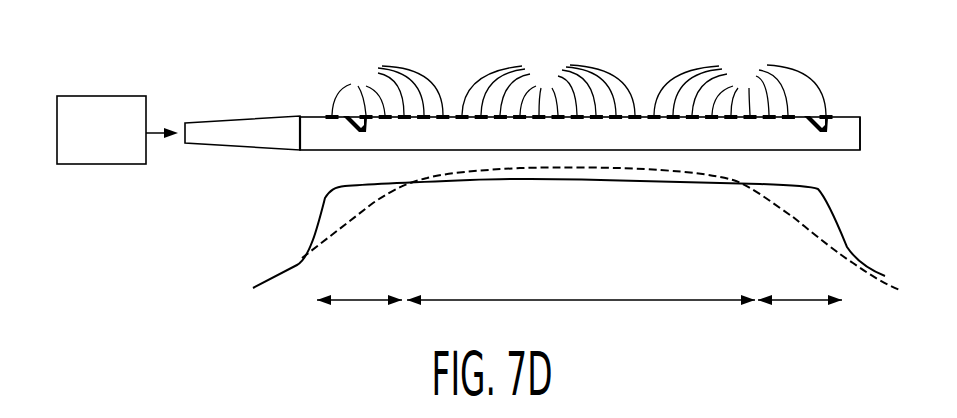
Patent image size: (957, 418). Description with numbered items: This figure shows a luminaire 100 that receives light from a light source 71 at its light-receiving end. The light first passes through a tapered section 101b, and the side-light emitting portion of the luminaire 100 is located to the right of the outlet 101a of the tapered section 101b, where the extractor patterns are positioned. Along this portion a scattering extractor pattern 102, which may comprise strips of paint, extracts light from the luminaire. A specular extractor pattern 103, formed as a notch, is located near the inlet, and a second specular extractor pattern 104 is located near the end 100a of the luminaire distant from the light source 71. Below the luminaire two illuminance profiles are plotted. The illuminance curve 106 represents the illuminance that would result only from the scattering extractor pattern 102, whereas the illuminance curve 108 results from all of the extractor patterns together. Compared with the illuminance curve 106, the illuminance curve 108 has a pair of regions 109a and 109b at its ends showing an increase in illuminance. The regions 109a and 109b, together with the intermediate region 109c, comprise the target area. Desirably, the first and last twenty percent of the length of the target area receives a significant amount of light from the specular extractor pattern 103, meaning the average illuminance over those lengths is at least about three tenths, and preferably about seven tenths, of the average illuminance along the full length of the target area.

The light source 71 is at (106, 95).
The luminaire 100 is at (312, 74).
The end of the luminaire 100a is at (863, 130).
The outlet of the tapered section 101a is at (297, 132).
The tapered section 101b is at (212, 148).
The scattering extractor pattern 102 is at (579, 86).
The specular extractor pattern 103 is at (353, 121).
The second specular extractor pattern 104 is at (815, 123).
The illuminance curve 106 is at (372, 203).
The illuminance curve 108 is at (300, 229).
The region 109a is at (360, 302).
The region 109b is at (798, 302).
The intermediate region 109c is at (538, 301).